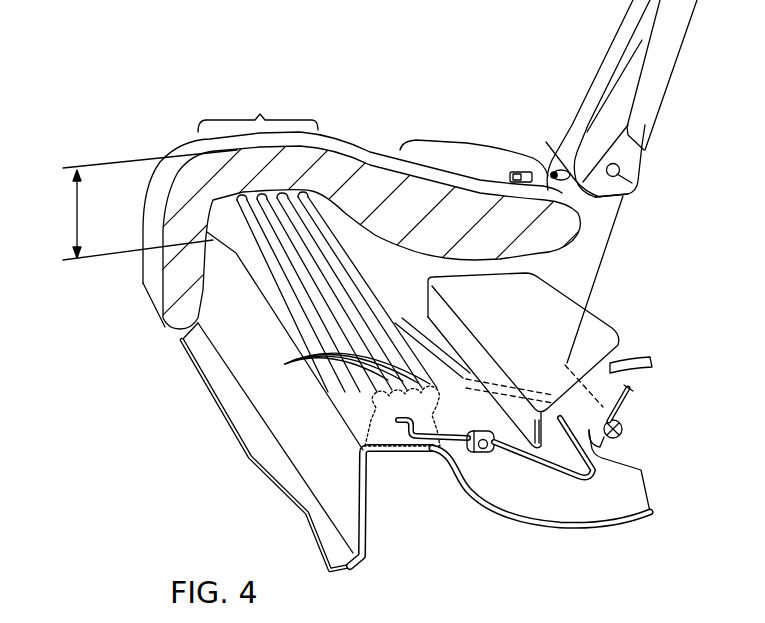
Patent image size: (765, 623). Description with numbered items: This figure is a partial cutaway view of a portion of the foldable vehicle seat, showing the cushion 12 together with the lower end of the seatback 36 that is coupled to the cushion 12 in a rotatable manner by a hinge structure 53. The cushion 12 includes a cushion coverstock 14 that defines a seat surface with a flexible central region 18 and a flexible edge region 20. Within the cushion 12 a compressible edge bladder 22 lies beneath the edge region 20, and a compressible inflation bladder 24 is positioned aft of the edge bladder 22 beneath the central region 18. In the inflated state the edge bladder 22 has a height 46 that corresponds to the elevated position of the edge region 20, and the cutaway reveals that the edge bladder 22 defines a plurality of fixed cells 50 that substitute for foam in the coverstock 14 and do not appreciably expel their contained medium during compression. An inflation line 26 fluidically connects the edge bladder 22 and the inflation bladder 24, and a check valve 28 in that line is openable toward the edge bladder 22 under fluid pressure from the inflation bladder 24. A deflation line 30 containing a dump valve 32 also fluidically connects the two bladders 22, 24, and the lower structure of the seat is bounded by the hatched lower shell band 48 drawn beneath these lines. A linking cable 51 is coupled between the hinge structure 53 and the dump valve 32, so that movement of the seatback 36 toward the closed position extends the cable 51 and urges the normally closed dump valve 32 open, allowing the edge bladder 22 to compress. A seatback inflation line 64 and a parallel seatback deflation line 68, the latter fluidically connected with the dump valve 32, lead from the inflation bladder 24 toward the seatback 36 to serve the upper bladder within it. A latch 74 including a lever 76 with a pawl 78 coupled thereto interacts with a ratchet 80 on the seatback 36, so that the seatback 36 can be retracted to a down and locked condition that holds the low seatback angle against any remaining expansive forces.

The cushion 12 is at (592, 226).
The cushion coverstock 14 is at (550, 230).
The central region 18 is at (487, 145).
The edge region 20 is at (260, 116).
The edge bladder 22 is at (287, 311).
The inflation bladder 24 is at (620, 353).
The inflation line 26 is at (455, 440).
The check valve 28 is at (478, 458).
The deflation line 30 is at (637, 473).
The dump valve 32 is at (596, 441).
The seatback 36 is at (660, 66).
The height 46 is at (75, 200).
The lower shell band 48 is at (543, 532).
The fixed cells 50 is at (346, 368).
The linking cable 51 is at (603, 260).
The hinge structure 53 is at (620, 168).
The seatback inflation line 64 is at (650, 370).
The seatback deflation line 68 is at (623, 410).
The latch 74 is at (544, 144).
The lever 76 is at (523, 177).
The pawl 78 is at (576, 148).
The ratchet 80 is at (630, 195).